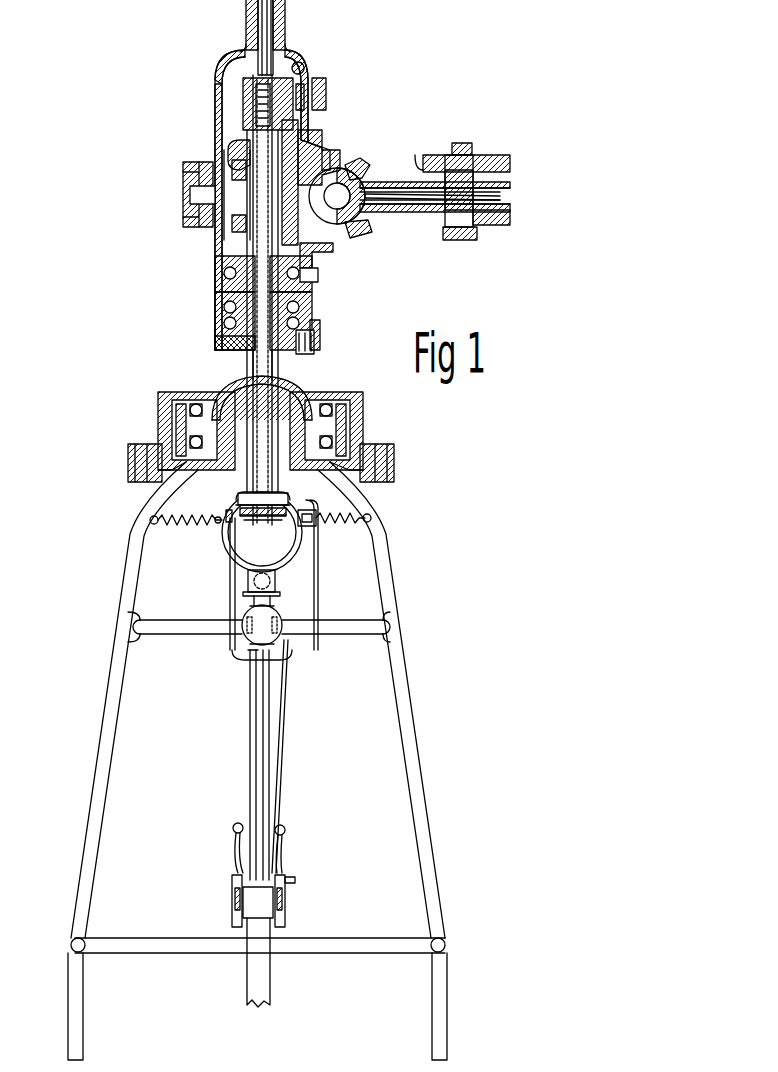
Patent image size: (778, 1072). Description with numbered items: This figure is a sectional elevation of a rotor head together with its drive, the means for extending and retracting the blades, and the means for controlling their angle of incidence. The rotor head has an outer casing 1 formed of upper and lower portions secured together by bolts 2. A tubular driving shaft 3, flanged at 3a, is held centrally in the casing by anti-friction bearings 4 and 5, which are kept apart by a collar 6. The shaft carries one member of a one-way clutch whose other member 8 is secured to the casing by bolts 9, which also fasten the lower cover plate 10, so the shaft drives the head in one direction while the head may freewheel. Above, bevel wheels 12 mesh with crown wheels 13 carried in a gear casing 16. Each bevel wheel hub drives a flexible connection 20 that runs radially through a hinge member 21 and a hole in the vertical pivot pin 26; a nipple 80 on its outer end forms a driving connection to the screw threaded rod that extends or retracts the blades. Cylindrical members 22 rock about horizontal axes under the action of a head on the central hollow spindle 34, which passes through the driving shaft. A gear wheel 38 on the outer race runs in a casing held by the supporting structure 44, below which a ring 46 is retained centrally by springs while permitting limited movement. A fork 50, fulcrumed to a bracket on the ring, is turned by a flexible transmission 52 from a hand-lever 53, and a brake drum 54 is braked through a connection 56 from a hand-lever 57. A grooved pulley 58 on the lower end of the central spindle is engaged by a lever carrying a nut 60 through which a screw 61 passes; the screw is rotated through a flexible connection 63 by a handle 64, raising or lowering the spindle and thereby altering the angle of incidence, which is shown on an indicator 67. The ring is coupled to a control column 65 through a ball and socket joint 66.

The casing 1 is at (150, 247).
The bolts 2 is at (165, 166).
The driving shaft 3 is at (300, 322).
The flange 3a is at (320, 261).
The anti-friction bearing 4 is at (226, 273).
The anti-friction bearing 5 is at (226, 306).
The collar 6 is at (300, 291).
The clutch member 8 is at (292, 338).
The bolts 9 is at (150, 346).
The lower cover plate 10 is at (314, 352).
The bevel wheels 12 is at (314, 158).
The crown wheels 13 is at (236, 170).
The gear casing 16 is at (232, 158).
The flexible connection 20 is at (385, 192).
The hinge member 21 is at (406, 213).
The cylindrical member 22 is at (326, 176).
The vertical pivot pin 26 is at (366, 185).
The central hollow spindle 34 is at (262, 372).
The gear wheel 38 is at (176, 425).
The supporting structure 44 is at (412, 732).
The ring 46 is at (290, 560).
The fork 50 is at (262, 503).
The flexible power transmission means 52 is at (248, 569).
The hand-lever 53 is at (234, 827).
The brake drum 54 is at (290, 502).
The flexible connection 56 is at (316, 586).
The hand-lever 57 is at (284, 840).
The grooved pulley 58 is at (265, 522).
The nut 60 is at (302, 524).
The screw 61 is at (364, 520).
The flexible connection 63 is at (273, 690).
The handle 64 is at (296, 880).
The control column 65 is at (252, 690).
The ball and socket joint 66 is at (248, 590).
The indicator 67 is at (286, 896).
The nipple 80 is at (236, 900).